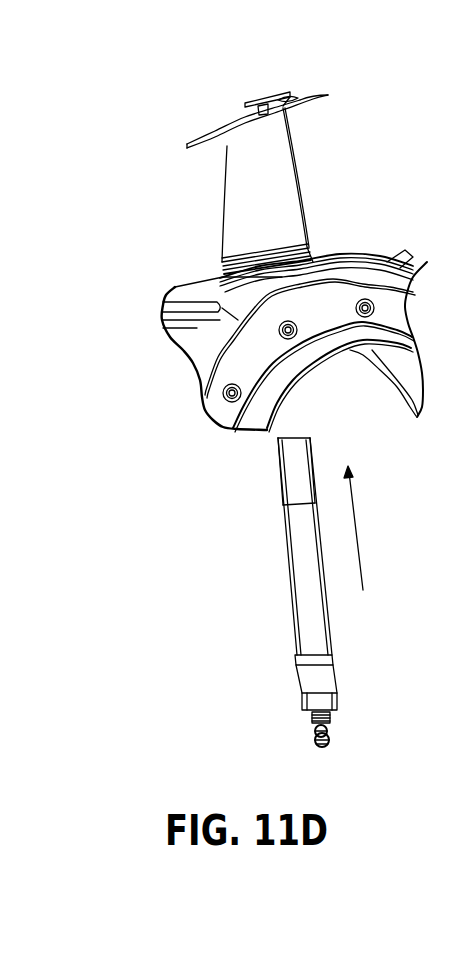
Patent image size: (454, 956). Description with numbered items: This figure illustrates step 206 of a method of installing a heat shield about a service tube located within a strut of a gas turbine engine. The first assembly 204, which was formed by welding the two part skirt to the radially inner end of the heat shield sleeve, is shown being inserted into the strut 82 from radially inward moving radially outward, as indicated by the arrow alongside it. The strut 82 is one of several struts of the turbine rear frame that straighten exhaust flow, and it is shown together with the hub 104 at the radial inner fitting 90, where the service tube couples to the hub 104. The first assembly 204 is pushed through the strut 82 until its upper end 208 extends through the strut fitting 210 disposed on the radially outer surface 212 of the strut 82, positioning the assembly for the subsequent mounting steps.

The strut 82 is at (268, 183).
The radial inner fitting 90 is at (335, 723).
The hub 104 is at (358, 268).
The first assembly 204 is at (336, 611).
The step 206 is at (172, 232).
The upper end 208 is at (292, 438).
The strut fitting 210 is at (245, 103).
The radially outer surface 212 is at (307, 98).